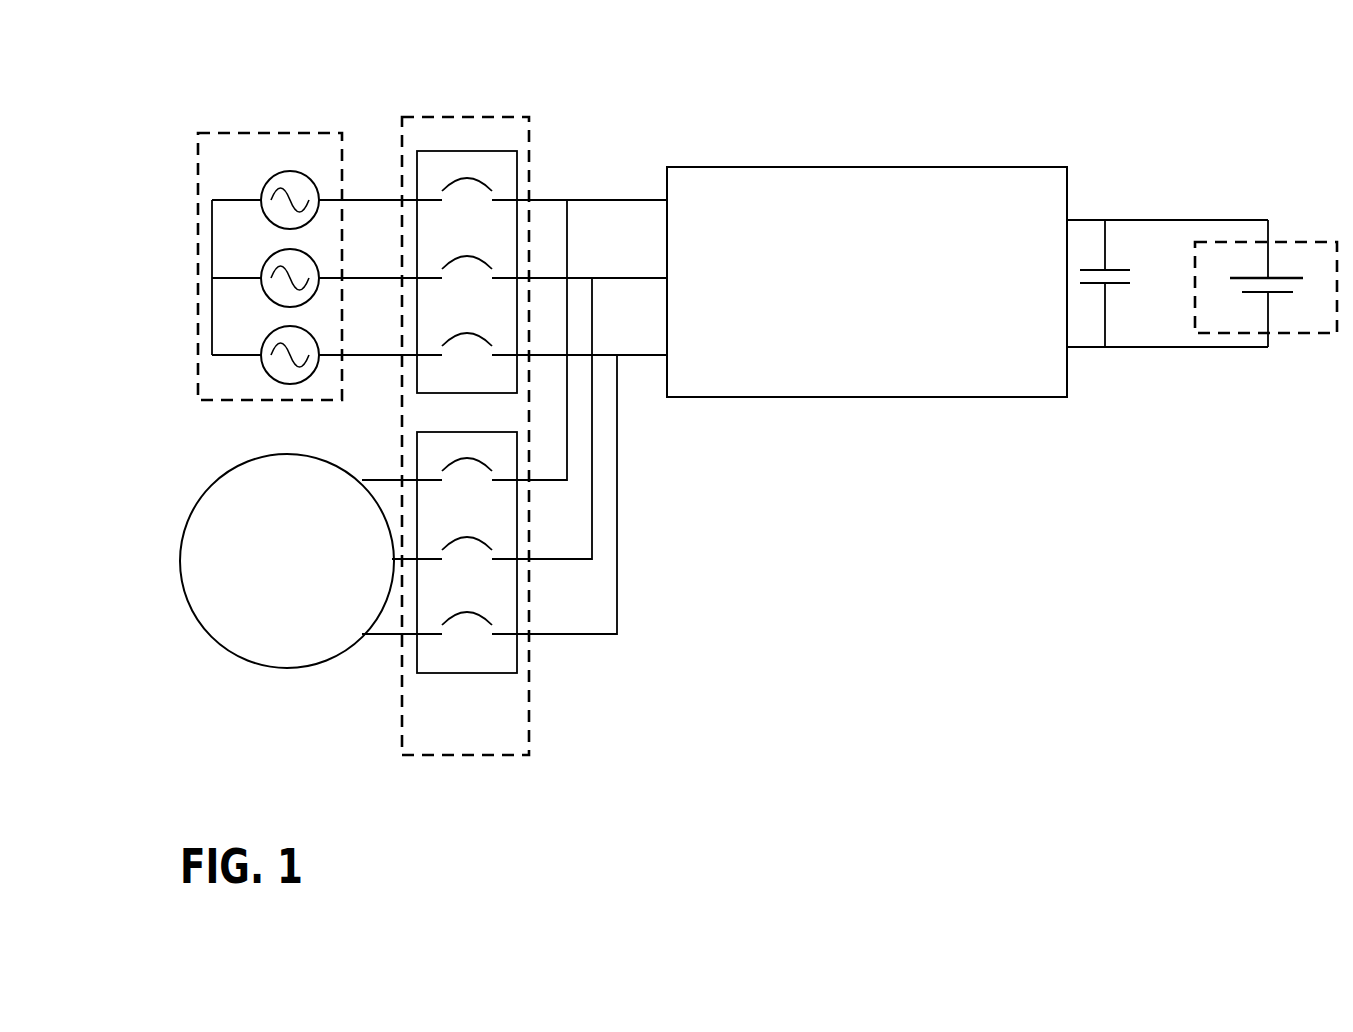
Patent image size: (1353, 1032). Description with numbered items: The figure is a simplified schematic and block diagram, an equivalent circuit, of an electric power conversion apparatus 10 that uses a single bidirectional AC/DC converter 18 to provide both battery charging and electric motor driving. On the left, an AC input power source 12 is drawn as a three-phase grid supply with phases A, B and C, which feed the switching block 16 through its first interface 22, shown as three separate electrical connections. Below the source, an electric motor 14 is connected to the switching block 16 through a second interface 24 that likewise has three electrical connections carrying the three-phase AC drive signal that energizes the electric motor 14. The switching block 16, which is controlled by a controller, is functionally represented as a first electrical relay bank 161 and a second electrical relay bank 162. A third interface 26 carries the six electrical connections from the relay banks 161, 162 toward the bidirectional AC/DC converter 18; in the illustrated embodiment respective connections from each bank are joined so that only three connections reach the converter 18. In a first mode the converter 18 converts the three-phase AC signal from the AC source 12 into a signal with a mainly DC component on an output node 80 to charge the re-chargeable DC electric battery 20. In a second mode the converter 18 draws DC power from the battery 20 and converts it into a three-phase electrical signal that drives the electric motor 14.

The electric power conversion apparatus 10 is at (775, 95).
The AC input power source 12 is at (227, 133).
The electric motor 14 is at (290, 668).
The switching block 16 is at (455, 117).
The first electrical relay bank 161 is at (443, 151).
The second electrical relay bank 162 is at (443, 432).
The bidirectional AC/DC converter 18 is at (878, 167).
The re-chargeable DC electric battery 20 is at (1288, 242).
The first interface 22 is at (392, 188).
The second interface 24 is at (391, 645).
The third interface 26 is at (540, 646).
The output node 80 is at (1127, 220).